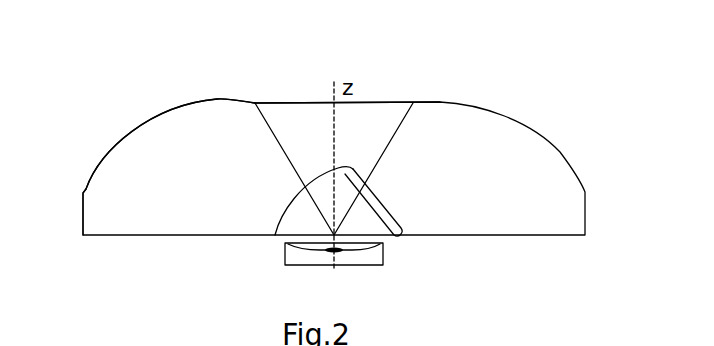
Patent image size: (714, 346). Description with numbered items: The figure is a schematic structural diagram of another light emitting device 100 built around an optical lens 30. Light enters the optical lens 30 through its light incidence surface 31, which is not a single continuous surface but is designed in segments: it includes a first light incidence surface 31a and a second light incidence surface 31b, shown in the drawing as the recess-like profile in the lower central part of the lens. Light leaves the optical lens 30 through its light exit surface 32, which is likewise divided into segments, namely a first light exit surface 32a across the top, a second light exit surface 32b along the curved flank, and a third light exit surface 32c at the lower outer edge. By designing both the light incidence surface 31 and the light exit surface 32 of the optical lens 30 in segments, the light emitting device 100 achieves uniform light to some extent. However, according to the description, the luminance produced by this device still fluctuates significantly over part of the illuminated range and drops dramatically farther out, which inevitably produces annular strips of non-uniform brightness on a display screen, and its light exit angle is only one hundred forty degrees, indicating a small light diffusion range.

The light emitting device 100 is at (540, 16).
The optical lens 30 is at (487, 143).
The light incidence surface 31 is at (369, 197).
The first light incidence surface 31a is at (361, 187).
The second light incidence surface 31b is at (385, 205).
The light exit surface 32 is at (240, 121).
The first light exit surface 32a is at (302, 120).
The second light exit surface 32b is at (150, 140).
The third light exit surface 32c is at (96, 228).